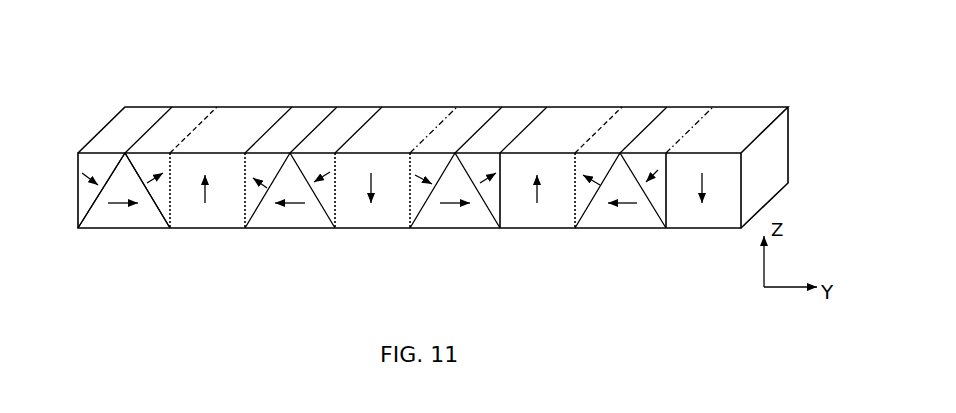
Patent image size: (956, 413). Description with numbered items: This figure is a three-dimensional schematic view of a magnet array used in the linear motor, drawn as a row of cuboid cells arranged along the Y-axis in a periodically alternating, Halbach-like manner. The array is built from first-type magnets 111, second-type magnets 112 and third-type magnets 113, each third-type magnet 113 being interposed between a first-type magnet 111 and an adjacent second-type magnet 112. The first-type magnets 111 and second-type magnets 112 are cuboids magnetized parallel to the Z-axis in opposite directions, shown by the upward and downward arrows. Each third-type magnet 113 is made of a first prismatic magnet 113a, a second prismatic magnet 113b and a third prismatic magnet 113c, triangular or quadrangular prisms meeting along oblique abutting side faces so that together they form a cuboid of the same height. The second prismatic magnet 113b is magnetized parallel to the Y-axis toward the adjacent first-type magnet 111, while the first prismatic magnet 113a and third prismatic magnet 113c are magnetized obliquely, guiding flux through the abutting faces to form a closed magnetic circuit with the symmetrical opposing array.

The first-type magnet 111 is at (207, 205).
The second magnet segment (vertical downward magnetization) 112 is at (372, 205).
The third magnet segment (triangular sub-segmented) 113 is at (463, 200).
The first sub-segment of third magnet segment 113a is at (83, 200).
The second sub-segment of third magnet segment 113b is at (122, 206).
The third sub-segment of third magnet segment 113c is at (160, 197).